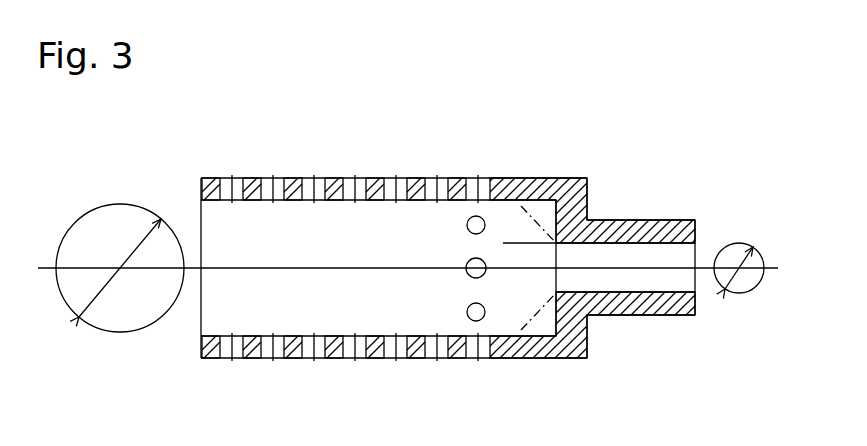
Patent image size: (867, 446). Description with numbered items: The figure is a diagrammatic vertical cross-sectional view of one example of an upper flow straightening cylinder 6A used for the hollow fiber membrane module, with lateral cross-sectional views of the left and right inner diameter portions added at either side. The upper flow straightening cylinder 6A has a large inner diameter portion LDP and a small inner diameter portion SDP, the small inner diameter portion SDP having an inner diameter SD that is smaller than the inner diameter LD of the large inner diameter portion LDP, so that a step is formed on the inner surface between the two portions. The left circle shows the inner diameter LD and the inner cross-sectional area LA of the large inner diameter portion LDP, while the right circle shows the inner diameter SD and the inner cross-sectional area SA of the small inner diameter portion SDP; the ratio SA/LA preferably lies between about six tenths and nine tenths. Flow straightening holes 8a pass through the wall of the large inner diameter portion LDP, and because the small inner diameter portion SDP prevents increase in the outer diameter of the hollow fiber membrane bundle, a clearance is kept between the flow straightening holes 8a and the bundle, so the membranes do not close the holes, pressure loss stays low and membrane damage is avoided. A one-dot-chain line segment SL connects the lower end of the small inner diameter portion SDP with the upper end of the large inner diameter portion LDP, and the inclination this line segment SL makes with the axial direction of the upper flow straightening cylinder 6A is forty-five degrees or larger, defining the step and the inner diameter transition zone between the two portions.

The inner cross-sectional area of the large inner diameter portion LA is at (107, 242).
The inner diameter of the large inner diameter portion LD is at (112, 282).
The large inner diameter portion LDP is at (502, 182).
The small inner diameter portion SDP is at (637, 220).
The line segment SL is at (533, 218).
The flow straightening holes 8a is at (481, 277).
The upper flow straightening cylinder 6A is at (570, 357).
The inner cross-sectional area of the small inner diameter portion SA is at (733, 258).
The inner diameter of the small inner diameter portion SD is at (737, 283).